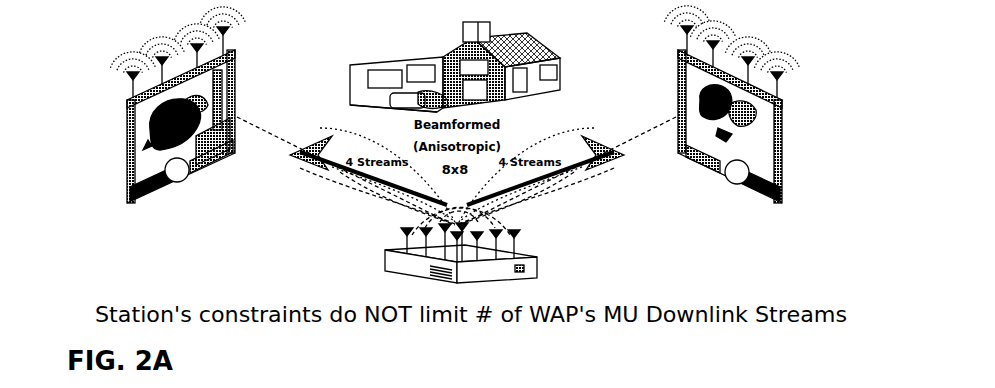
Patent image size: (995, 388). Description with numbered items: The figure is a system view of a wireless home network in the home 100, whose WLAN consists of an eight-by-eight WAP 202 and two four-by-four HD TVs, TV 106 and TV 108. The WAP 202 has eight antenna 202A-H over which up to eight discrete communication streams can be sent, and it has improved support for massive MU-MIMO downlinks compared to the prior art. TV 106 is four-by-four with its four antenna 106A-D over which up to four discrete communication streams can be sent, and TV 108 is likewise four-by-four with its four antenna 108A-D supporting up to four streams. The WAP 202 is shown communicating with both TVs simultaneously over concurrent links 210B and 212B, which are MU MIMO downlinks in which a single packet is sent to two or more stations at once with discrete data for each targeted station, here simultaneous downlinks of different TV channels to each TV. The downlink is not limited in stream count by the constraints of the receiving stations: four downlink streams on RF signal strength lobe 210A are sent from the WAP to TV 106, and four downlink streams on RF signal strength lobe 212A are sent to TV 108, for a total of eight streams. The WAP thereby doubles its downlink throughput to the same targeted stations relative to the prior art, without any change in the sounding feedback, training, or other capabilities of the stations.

The home 100 is at (413, 60).
The HD TV 106 is at (234, 54).
The antenna 106A-D is at (136, 82).
The HD TV 108 is at (680, 54).
The antenna 108A-D is at (778, 82).
The WAP 202 is at (537, 272).
The antenna 202A-H is at (400, 236).
The RF signal strength lobe 210A is at (318, 131).
The concurrent link 210B is at (300, 163).
The RF signal strength lobe 212A is at (676, 106).
The concurrent link 212B is at (604, 163).